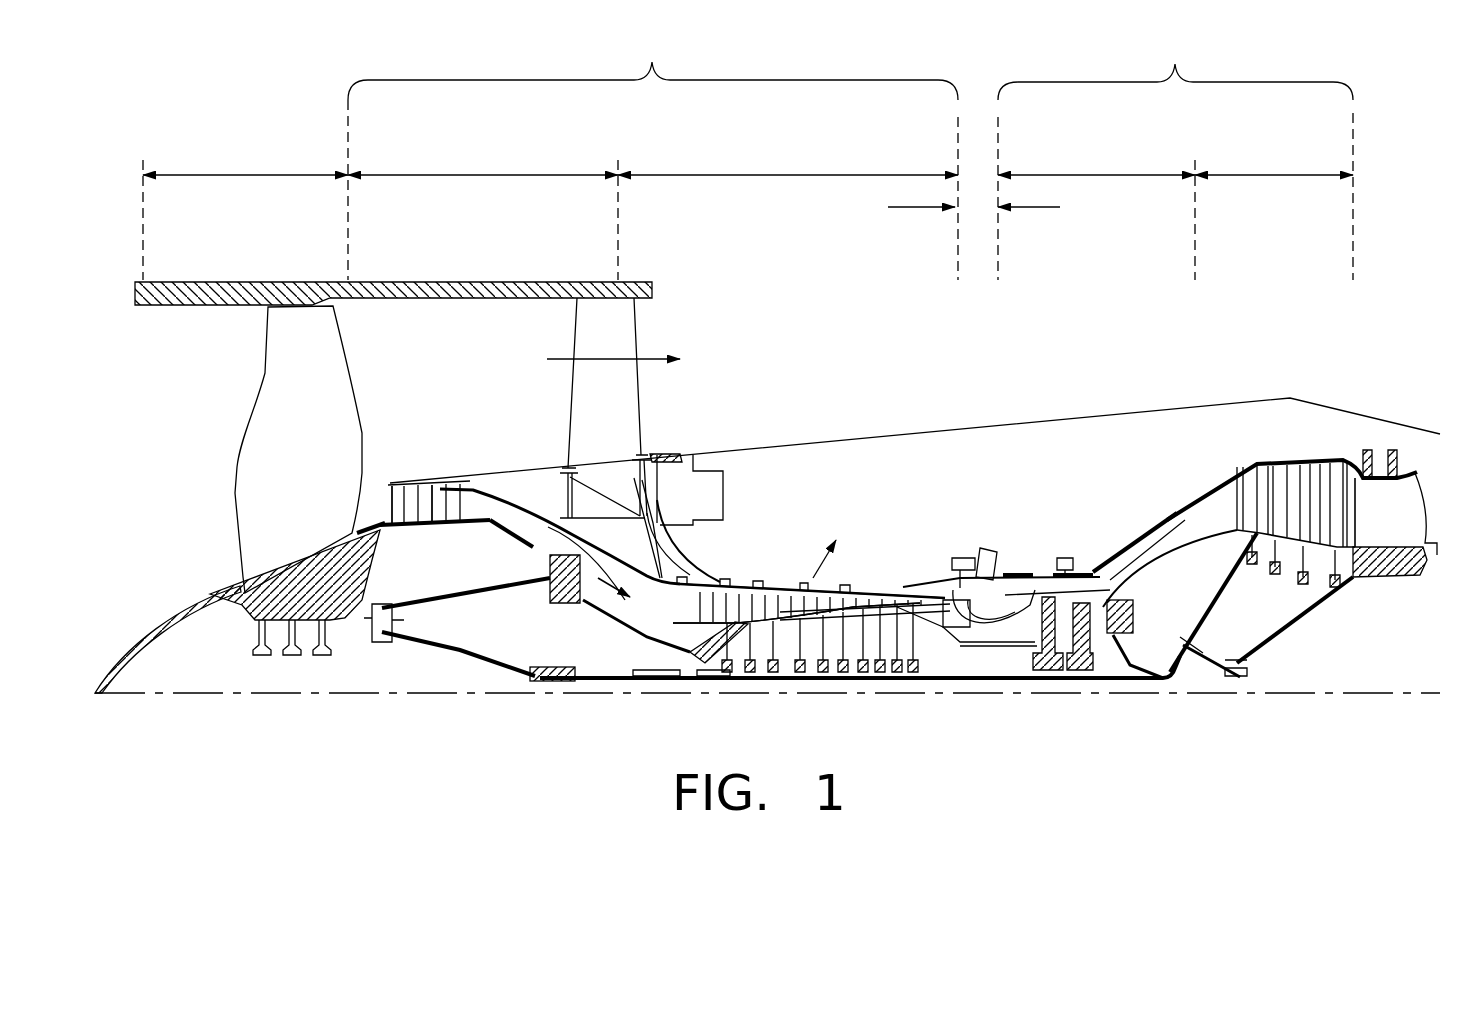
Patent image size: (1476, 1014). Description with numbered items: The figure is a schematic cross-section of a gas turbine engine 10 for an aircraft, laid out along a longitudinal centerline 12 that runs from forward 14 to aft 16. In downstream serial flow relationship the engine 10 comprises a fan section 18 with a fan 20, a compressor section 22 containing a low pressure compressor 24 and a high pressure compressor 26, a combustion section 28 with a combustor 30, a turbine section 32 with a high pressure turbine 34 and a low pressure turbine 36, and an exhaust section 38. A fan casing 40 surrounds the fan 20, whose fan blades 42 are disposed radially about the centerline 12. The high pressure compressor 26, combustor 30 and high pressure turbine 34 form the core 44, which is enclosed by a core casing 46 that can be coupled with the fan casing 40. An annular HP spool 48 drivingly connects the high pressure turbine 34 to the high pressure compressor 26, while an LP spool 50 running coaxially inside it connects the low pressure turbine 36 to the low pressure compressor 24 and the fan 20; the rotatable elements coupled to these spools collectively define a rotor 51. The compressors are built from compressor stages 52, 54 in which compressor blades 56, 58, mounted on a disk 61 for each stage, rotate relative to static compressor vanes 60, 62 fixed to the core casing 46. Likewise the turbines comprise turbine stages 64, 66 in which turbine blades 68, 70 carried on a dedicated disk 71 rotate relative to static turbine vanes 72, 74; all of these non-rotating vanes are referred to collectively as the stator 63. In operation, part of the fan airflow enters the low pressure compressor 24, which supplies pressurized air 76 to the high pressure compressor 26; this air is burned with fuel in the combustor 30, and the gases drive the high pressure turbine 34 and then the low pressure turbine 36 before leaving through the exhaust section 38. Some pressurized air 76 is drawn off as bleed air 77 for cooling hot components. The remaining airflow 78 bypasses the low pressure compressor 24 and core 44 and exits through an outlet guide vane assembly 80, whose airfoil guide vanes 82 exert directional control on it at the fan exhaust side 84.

The gas turbine engine 10 is at (1368, 205).
The centerline 12 is at (222, 700).
The forward 14 is at (140, 421).
The aft 16 is at (1456, 512).
The fan section 18 is at (246, 175).
The fan 20 is at (213, 543).
The compressor section 22 is at (655, 62).
The low pressure compressor 24 is at (494, 175).
The high pressure compressor 26 is at (796, 175).
The combustion section 28 is at (902, 207).
The combustor 30 is at (1000, 592).
The turbine section 32 is at (1178, 63).
The high pressure turbine 34 is at (1096, 175).
The low pressure turbine 36 is at (1272, 175).
The exhaust section 38 is at (1417, 486).
The fan casing 40 is at (384, 282).
The fan blades 42 is at (320, 350).
The core 44 is at (916, 468).
The core casing 46 is at (1177, 517).
The HP shaft or spool 48 is at (960, 652).
The LP shaft or spool 50 is at (553, 684).
The rotor 51 is at (817, 694).
The compressor stages 52 is at (422, 402).
The compressor stages 54 is at (788, 575).
The compressor blades 56 is at (428, 492).
The compressor blades 58 is at (712, 615).
The static compressor vanes 60 is at (404, 490).
The disk 61 is at (444, 528).
The static compressor vanes 62 is at (694, 586).
The stator 63 is at (690, 644).
The turbine stages 64 is at (998, 520).
The turbine stages 66 is at (1280, 400).
The turbine blades 68 is at (1058, 596).
The turbine blades 70 is at (1338, 466).
The disk 71 is at (1297, 582).
The static turbine vanes 72 is at (1040, 596).
The static turbine vanes 74 is at (1322, 466).
The pressurized air 76 is at (586, 592).
The bleed air 77 is at (812, 576).
The airflow 78 is at (555, 358).
The outlet guide vane assembly 80 is at (655, 422).
The airfoil guide vanes 82 is at (580, 395).
The fan exhaust side 84 is at (655, 332).